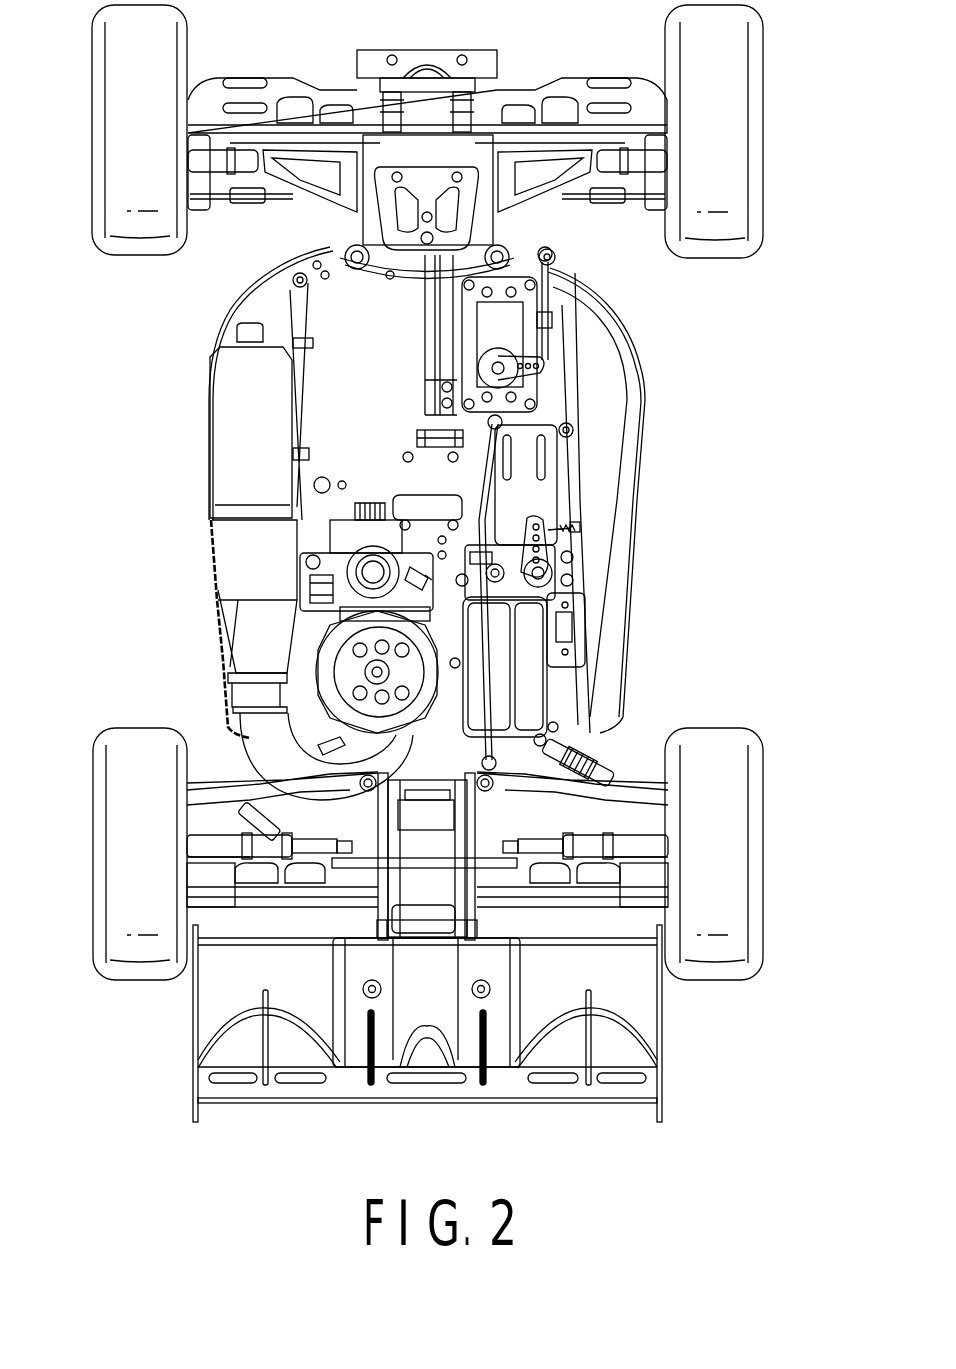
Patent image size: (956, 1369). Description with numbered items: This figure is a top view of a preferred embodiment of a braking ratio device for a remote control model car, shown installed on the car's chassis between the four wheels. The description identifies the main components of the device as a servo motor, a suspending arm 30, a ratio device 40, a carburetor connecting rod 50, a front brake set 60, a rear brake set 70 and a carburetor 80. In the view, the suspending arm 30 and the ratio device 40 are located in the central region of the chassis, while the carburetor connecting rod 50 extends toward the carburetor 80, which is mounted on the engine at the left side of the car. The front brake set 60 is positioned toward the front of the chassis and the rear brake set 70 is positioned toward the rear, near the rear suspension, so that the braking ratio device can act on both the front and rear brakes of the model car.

The suspending arm 30 is at (558, 550).
The ratio device 40 is at (512, 575).
The carburetor connecting rod 50 is at (455, 549).
The front brake set 60 is at (395, 445).
The rear brake set 70 is at (570, 740).
The carburetor 80 is at (293, 587).